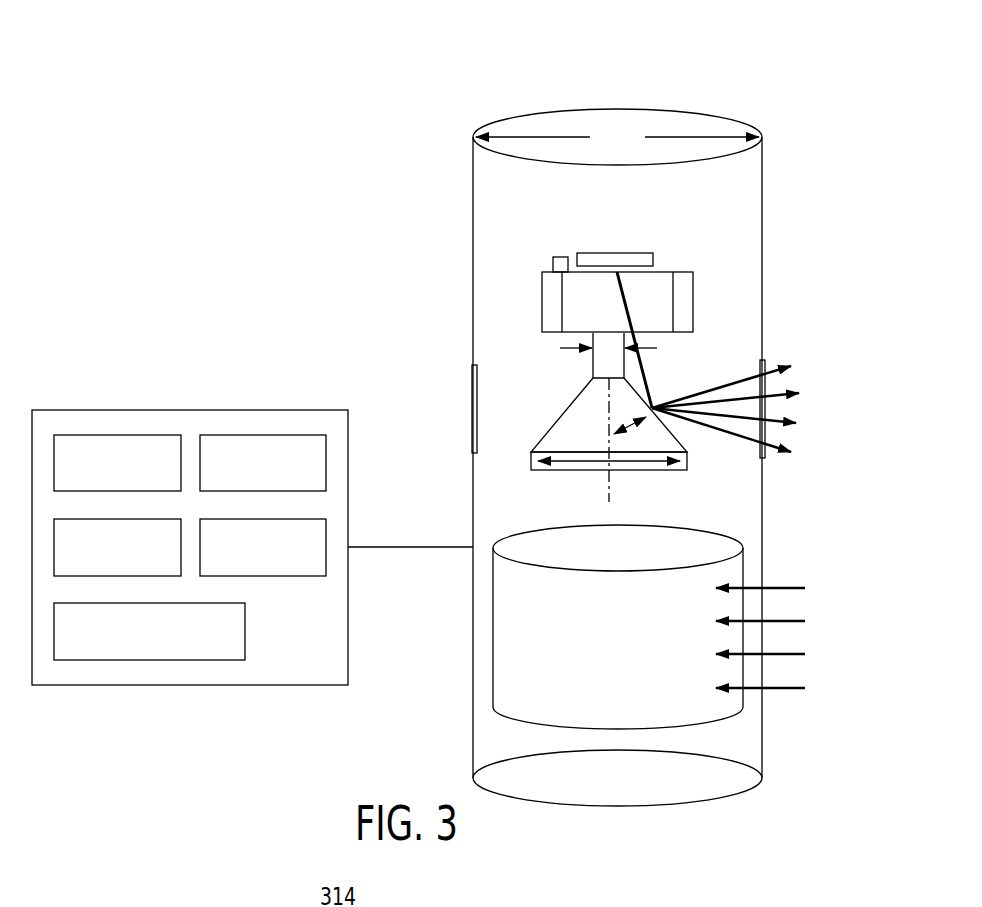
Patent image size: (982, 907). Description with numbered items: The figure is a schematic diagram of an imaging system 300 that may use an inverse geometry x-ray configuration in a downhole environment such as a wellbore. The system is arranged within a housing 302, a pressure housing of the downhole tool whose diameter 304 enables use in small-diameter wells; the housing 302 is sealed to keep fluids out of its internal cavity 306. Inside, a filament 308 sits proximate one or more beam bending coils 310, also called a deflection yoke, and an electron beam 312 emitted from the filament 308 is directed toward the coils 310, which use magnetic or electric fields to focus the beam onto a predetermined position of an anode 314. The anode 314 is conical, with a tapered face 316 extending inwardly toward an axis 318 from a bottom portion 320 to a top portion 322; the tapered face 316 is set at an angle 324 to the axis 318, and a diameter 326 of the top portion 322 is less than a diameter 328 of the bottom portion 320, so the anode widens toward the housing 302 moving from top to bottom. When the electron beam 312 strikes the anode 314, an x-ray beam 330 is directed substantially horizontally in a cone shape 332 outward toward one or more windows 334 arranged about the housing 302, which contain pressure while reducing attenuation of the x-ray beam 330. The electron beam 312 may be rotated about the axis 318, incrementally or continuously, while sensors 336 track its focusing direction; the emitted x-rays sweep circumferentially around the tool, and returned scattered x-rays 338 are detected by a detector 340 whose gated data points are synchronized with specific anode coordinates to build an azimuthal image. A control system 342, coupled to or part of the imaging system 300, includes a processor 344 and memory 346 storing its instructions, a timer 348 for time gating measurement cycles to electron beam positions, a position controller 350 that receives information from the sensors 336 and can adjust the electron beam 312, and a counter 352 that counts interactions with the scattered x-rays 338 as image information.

The imaging system 300 is at (742, 47).
The housing 302 is at (763, 160).
The diameter 304 is at (617, 138).
The internal cavity 306 is at (733, 219).
The filament 308 is at (653, 262).
The beam bending coils 310 is at (693, 300).
The electron beam 312 is at (627, 368).
The anode 314 is at (576, 415).
The tapered face 316 is at (683, 440).
The axis 318 is at (612, 490).
The bottom portion 320 is at (524, 486).
The top portion 322 is at (572, 368).
The angle 324 is at (643, 424).
The diameter of the top portion 326 is at (570, 344).
The diameter of the bottom portion 328 is at (582, 463).
The x-ray beam 330 is at (782, 356).
The cone shape 332 is at (782, 463).
The windows 334 is at (471, 385).
The sensors 336 is at (560, 257).
The scattered x-rays 338 is at (780, 588).
The detector 340 is at (598, 659).
The control system 342 is at (93, 382).
The processor 344 is at (115, 491).
The memory 346 is at (115, 576).
The timer 348 is at (145, 660).
The position controller 350 is at (262, 491).
The counter 352 is at (262, 576).